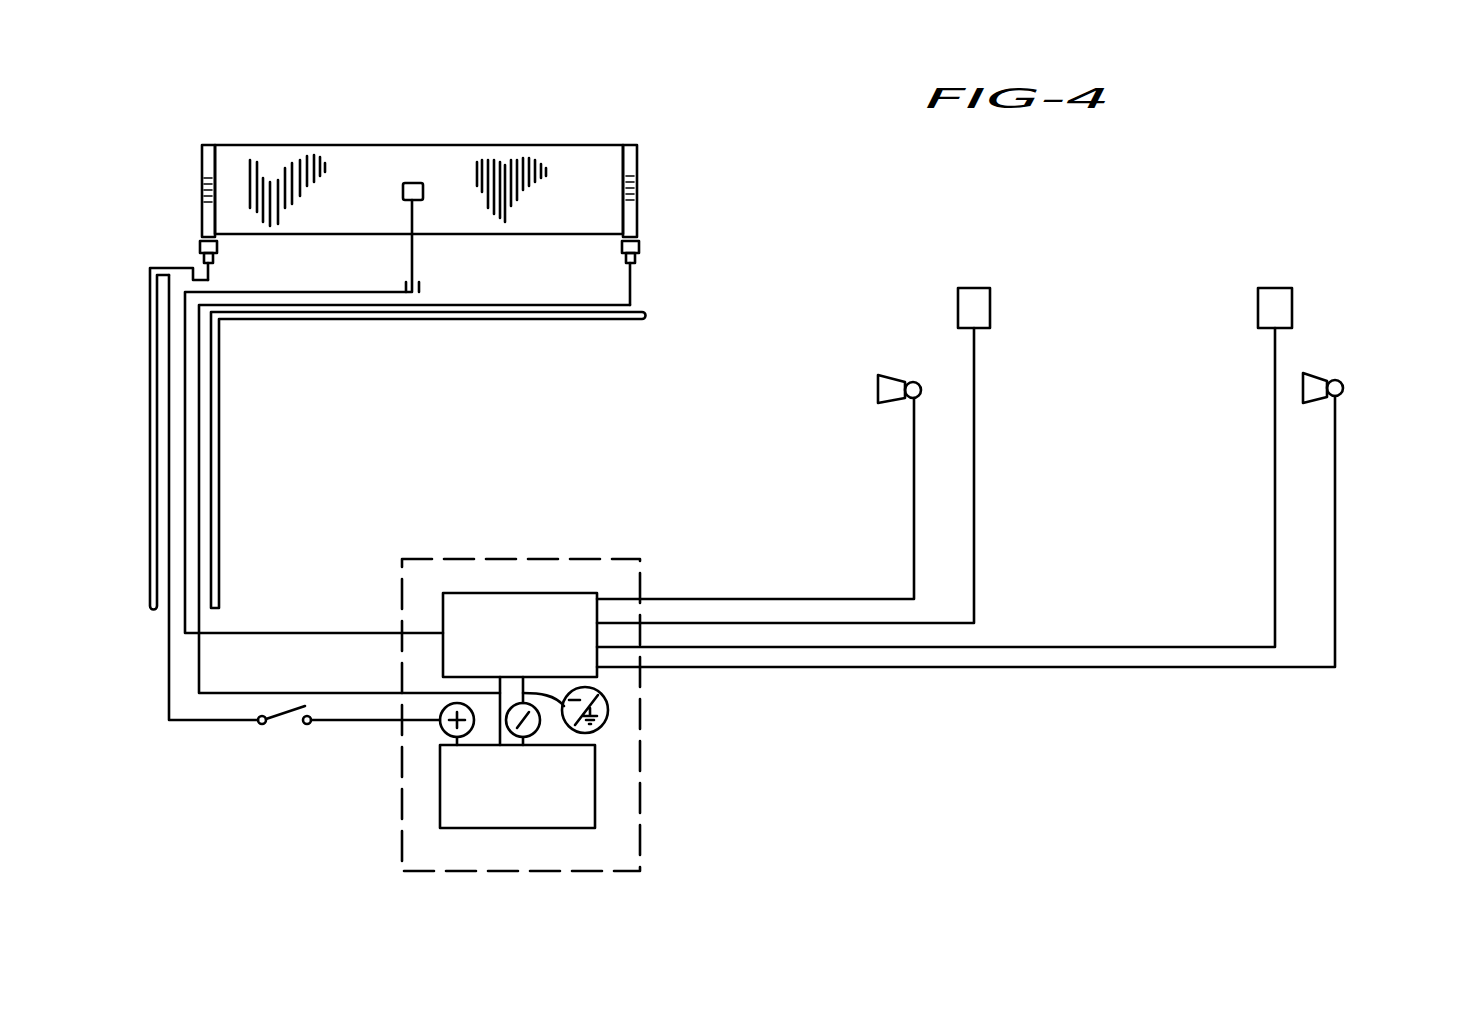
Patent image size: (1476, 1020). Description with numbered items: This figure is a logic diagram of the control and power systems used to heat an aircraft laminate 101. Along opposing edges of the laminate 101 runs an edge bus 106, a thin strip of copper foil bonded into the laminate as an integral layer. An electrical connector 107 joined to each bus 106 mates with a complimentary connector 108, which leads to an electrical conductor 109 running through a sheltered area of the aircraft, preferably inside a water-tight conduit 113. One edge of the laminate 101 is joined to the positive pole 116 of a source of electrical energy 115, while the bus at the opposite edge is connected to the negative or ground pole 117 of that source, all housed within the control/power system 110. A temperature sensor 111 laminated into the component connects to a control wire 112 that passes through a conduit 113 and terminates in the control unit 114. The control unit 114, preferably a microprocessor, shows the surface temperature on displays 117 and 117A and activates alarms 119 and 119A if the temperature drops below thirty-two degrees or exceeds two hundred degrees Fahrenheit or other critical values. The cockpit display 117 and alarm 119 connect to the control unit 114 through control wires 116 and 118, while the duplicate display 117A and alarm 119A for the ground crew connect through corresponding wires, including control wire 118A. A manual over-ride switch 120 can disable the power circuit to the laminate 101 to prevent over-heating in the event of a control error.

The laminate 101 is at (372, 170).
The edge bus 106 is at (203, 158).
The electrical connector 107 is at (200, 245).
The complimentary connector 108 is at (212, 260).
The electrical conductor 109 is at (165, 344).
The control/power system 110 is at (568, 312).
The temperature sensor 111 is at (412, 183).
The control wire 112 is at (413, 255).
The water-tight conduit 113 is at (150, 470).
The control unit 114 is at (546, 650).
The source of electrical energy 115 is at (546, 804).
The positive pole / control wire 116 is at (443, 725).
The negative or ground pole / display 117 is at (985, 288).
The display 117A is at (1275, 287).
The control wire 118 is at (914, 554).
The control wire 118A is at (1335, 553).
The alarm 119 is at (892, 380).
The alarm 119A is at (1312, 374).
The manual over-ride switch 120 is at (284, 724).